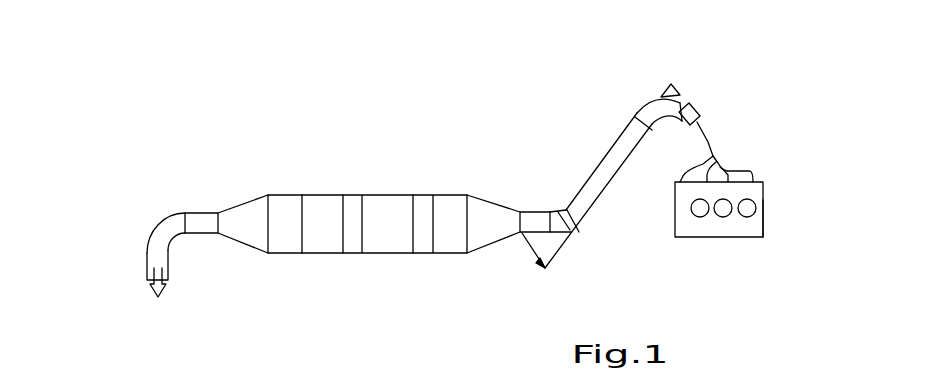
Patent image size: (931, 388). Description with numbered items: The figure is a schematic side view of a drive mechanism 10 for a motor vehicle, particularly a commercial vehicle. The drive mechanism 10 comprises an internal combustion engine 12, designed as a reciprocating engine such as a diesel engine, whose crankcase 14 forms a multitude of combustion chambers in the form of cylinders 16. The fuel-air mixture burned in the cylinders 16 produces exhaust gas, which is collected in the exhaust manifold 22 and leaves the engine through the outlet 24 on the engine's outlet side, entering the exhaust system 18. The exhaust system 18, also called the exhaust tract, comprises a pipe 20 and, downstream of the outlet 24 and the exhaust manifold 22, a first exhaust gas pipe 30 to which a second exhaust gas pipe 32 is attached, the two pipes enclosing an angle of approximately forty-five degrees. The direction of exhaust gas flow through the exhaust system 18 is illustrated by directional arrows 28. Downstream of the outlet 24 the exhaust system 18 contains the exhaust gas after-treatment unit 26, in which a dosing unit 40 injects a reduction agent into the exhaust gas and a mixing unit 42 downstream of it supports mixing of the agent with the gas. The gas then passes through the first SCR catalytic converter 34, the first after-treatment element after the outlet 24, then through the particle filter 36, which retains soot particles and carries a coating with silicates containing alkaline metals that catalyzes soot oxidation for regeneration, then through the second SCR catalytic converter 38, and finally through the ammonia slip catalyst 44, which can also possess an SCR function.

The drive mechanism 10 is at (140, 258).
The internal combustion engine 12 is at (674, 239).
The crankcase 14 is at (763, 218).
The cylinders 16 is at (700, 210).
The exhaust system 18 is at (693, 99).
The pipe 20 is at (712, 128).
The exhaust manifold 22 is at (720, 160).
The outlet 24 is at (756, 174).
The exhaust gas after-treatment unit 26 is at (268, 254).
The directional arrows 28 is at (167, 288).
The first exhaust gas pipe 30 is at (600, 162).
The second exhaust gas pipe 32 is at (529, 239).
The first SCR catalytic converter 34 is at (452, 212).
The particle filter 36 is at (392, 238).
The second SCR catalytic converter 38 is at (325, 238).
The dosing unit 40 is at (673, 82).
The mixing unit 42 is at (632, 112).
The ammonia slip catalyst 44 is at (285, 210).